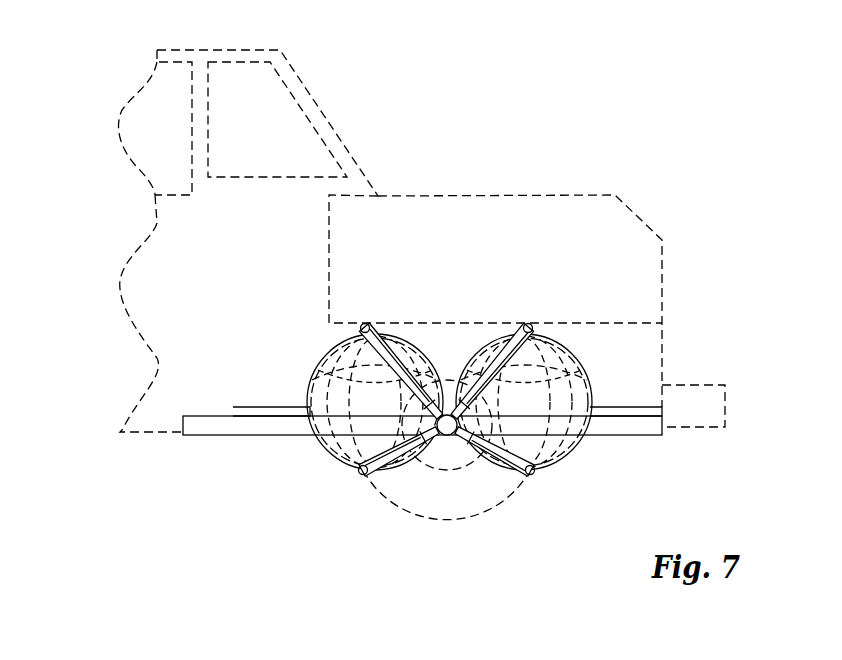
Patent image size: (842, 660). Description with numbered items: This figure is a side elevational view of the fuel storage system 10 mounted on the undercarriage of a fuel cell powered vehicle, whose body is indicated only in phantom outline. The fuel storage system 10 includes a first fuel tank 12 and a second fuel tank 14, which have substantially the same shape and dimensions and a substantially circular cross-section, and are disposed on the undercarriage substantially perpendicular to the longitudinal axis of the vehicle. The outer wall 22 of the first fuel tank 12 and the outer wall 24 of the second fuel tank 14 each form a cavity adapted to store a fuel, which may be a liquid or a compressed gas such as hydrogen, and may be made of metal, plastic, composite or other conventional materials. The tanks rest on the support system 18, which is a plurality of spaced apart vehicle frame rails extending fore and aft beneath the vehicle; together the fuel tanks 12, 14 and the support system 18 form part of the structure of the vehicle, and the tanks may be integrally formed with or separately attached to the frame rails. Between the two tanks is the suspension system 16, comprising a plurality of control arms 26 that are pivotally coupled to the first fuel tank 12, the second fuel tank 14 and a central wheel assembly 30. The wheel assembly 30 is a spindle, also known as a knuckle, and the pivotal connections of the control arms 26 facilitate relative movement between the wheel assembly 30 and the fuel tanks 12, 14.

The fuel storage system 10 is at (117, 94).
The first fuel tank 12 is at (395, 404).
The second fuel tank 14 is at (531, 404).
The suspension system 16 is at (407, 356).
The support system 18 is at (230, 410).
The outer wall of first fuel tank 22 is at (303, 380).
The outer wall of second fuel tank 24 is at (597, 379).
The control arms 26 is at (378, 373).
The wheel assembly 30 is at (446, 437).